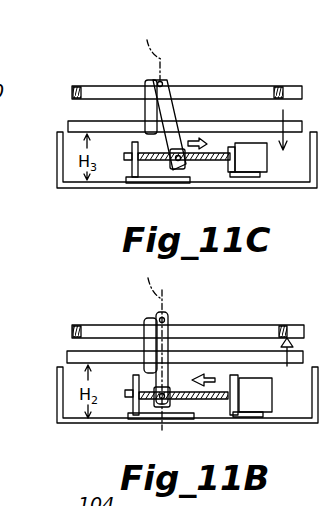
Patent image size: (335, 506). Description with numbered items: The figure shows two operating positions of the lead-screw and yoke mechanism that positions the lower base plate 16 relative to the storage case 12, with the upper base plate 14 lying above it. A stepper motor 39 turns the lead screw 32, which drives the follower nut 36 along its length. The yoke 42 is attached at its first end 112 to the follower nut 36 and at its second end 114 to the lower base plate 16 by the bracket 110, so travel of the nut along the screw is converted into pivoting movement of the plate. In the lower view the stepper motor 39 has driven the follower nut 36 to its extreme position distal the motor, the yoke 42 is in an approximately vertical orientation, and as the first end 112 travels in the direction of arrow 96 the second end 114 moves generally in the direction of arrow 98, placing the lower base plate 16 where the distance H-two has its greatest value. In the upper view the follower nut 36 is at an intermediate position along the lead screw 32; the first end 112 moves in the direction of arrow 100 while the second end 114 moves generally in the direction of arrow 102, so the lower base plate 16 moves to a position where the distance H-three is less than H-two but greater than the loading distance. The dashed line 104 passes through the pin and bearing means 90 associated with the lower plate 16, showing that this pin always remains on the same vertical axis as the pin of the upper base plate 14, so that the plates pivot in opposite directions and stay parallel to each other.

In FIG. 11C, the storage case 12 is at (92, 188).
In FIG. 11B, the storage case 12 is at (67, 424).
In FIG. 11C, the upper base plate 14 is at (247, 88).
In FIG. 11B, the upper base plate 14 is at (213, 330).
In FIG. 11C, the lower base plate 16 is at (298, 135).
In FIG. 11B, the lower base plate 16 is at (255, 356).
In FIG. 11C, the lead screw 32 is at (212, 163).
In FIG. 11B, the lead screw 32 is at (221, 399).
In FIG. 11C, the follower nut 36 is at (185, 172).
In FIG. 11B, the follower nut 36 is at (175, 410).
In FIG. 11C, the stepper motor 39 is at (250, 165).
In FIG. 11B, the stepper motor 39 is at (258, 399).
In FIG. 11C, the yoke 42 is at (145, 133).
In FIG. 11B, the yoke 42 is at (158, 358).
In FIG. 11C, the pin and bearing means 90 is at (163, 80).
In FIG. 11B, the pin and bearing means 90 is at (154, 320).
In FIG. 11B, the arrow 96 is at (208, 372).
In FIG. 11B, the arrow 98 is at (290, 342).
In FIG. 11C, the arrow 100 is at (203, 135).
In FIG. 11C, the arrow 102 is at (283, 110).
In FIG. 11C, the dashed line 104 is at (138, 52).
In FIG. 11B, the dashed line 104 is at (137, 346).
In FIG. 11C, the bracket 110 is at (145, 107).
In FIG. 11B, the bracket 110 is at (145, 330).
In FIG. 11C, the first end 112 is at (170, 170).
In FIG. 11B, the first end 112 is at (157, 398).
In FIG. 11C, the second end 114 is at (167, 83).
In FIG. 11B, the second end 114 is at (166, 318).